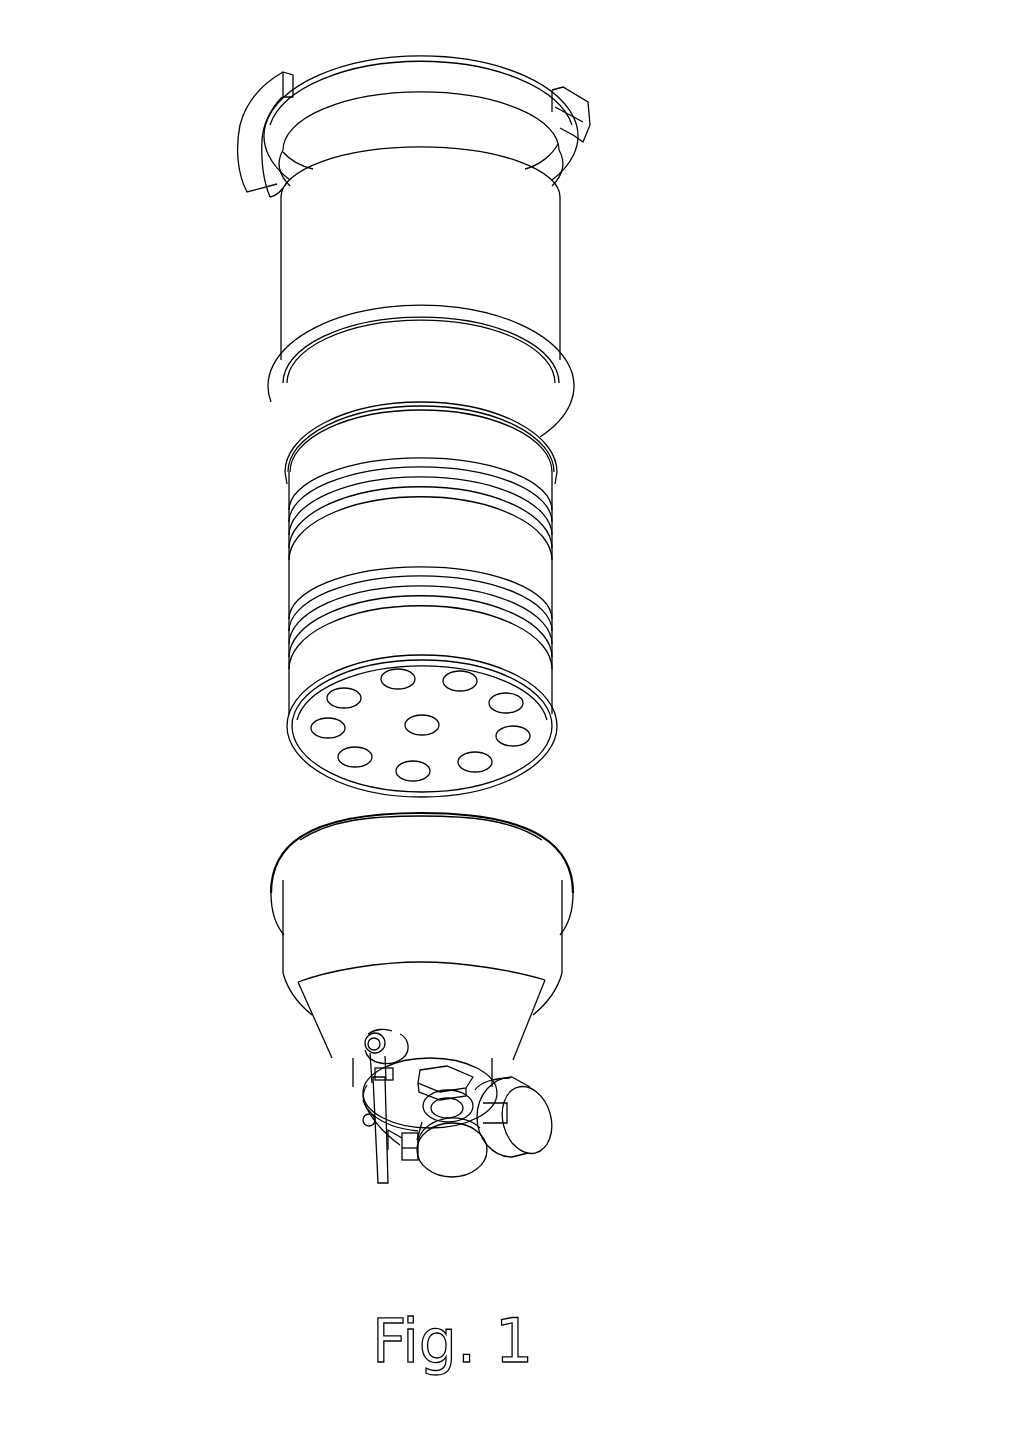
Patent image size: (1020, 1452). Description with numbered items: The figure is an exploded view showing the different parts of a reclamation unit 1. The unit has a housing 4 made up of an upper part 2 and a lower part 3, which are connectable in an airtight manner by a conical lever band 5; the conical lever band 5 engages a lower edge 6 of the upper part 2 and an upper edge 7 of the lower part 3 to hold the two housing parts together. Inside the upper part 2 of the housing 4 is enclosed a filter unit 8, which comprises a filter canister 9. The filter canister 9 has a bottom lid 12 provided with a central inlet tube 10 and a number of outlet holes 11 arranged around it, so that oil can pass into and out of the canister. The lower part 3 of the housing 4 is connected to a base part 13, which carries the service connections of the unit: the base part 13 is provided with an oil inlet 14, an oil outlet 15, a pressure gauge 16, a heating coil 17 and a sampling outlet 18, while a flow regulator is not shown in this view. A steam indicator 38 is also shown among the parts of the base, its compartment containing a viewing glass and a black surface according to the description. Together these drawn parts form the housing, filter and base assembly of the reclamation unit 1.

The reclamation unit 1 is at (692, 302).
The upper part of the housing 2 is at (572, 265).
The lower part of the housing 3 is at (584, 948).
The housing 4 is at (210, 316).
The conical lever band 5 is at (493, 78).
The lower edge of upper part 6 is at (574, 403).
The upper edge of lower part 7 is at (555, 845).
The filter unit 8 is at (612, 600).
The filter canister 9 is at (540, 480).
The inlet tube 10 is at (428, 722).
The outlet holes 11 is at (318, 728).
The bottom lid 12 is at (398, 741).
The base part 13 is at (503, 1033).
The oil inlet 14 is at (362, 1052).
The oil outlet 15 is at (500, 1090).
The pressure gauge 16 is at (457, 1160).
The heating coil 17 is at (376, 1150).
The sampling outlet 18 is at (410, 1177).
The steam indicator 38 is at (522, 1138).